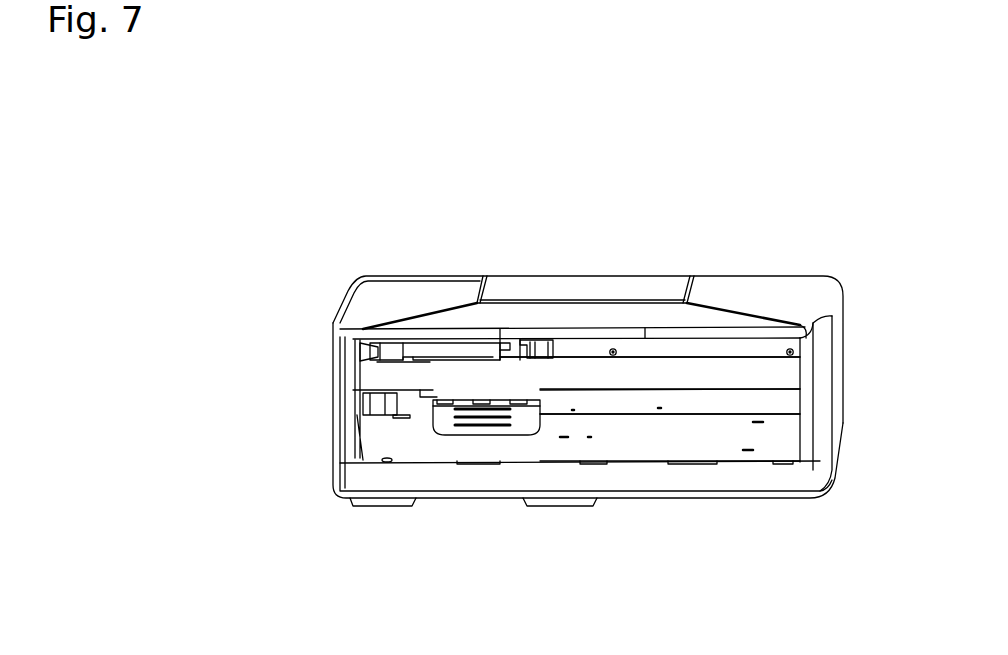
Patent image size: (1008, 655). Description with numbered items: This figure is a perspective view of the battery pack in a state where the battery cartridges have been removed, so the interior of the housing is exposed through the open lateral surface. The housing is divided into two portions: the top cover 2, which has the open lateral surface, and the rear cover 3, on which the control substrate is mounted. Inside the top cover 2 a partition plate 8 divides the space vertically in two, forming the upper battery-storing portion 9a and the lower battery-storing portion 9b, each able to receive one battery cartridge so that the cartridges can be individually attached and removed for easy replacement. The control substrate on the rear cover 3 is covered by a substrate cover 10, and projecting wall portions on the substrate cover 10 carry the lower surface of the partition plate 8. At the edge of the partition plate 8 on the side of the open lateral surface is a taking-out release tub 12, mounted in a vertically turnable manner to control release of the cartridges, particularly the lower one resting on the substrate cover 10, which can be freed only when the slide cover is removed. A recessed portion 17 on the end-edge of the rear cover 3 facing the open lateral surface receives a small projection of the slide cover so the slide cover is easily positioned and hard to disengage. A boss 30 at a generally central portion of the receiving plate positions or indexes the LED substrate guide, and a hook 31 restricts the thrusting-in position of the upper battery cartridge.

The top cover 2 is at (767, 280).
The rear cover 3 is at (783, 500).
The partition plate 8 is at (383, 377).
The battery-storing portion 9a is at (737, 385).
The battery-storing portion 9b is at (730, 448).
The substrate cover 10 is at (407, 457).
The taking-out release tub 12 is at (453, 417).
The recessed portion 17 is at (680, 465).
The boss 30 is at (553, 340).
The hook 31 is at (505, 348).